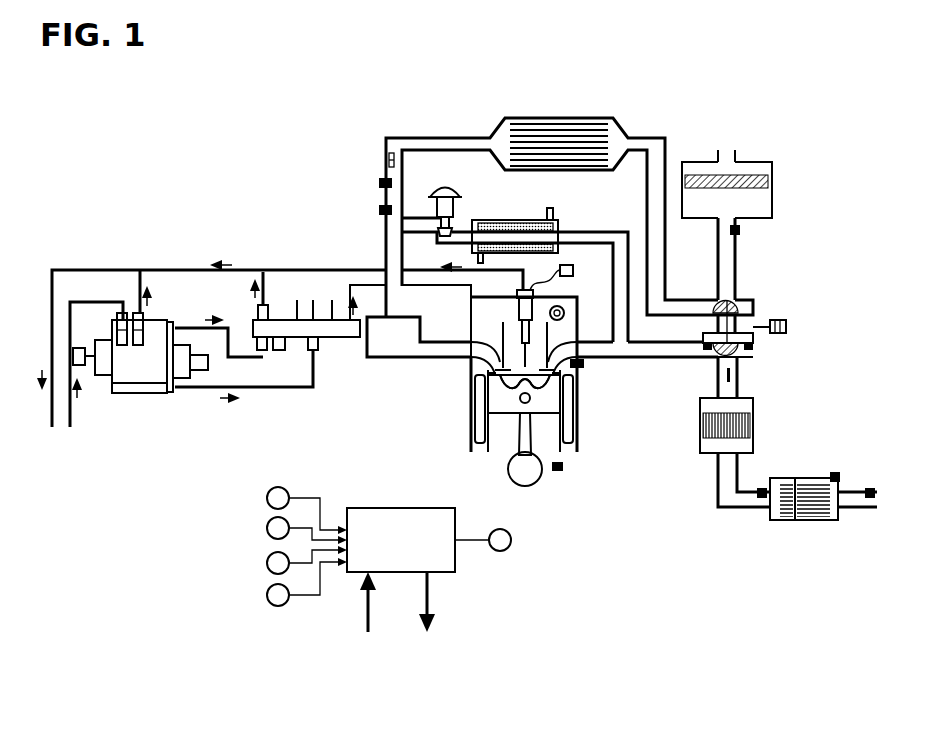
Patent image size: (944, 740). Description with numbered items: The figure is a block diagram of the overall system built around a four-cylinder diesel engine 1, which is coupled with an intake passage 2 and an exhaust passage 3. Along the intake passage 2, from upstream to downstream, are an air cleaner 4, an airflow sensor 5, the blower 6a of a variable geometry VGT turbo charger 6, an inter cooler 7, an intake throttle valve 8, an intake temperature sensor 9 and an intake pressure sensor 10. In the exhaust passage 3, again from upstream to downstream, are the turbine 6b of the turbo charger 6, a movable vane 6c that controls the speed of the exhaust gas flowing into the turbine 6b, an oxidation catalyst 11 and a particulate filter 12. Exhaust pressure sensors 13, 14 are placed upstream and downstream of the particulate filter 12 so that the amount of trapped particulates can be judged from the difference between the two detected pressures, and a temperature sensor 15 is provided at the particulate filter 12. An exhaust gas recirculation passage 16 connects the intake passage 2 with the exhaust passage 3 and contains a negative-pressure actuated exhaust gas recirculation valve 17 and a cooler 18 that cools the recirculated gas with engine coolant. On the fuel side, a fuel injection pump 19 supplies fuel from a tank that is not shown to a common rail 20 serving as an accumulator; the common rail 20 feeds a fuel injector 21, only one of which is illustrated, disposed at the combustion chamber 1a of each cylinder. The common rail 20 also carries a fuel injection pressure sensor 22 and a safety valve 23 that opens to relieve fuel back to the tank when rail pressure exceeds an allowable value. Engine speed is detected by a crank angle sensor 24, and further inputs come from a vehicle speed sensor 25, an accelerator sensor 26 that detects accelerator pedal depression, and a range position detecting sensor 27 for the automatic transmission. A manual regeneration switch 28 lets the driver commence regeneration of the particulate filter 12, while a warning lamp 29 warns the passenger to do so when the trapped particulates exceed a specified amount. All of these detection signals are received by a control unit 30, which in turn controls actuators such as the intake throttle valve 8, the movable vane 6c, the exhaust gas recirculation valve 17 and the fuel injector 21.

The diesel engine 1 is at (593, 445).
The combustion chamber 1a is at (513, 385).
The intake passage 2 is at (650, 124).
The exhaust passage 3 is at (631, 368).
The air cleaner 4 is at (763, 170).
The airflow sensor 5 is at (741, 230).
The VGT turbo charger 6 is at (750, 321).
The blower 6a is at (741, 305).
The turbine 6b is at (745, 355).
The movable vane 6c is at (708, 350).
The inter cooler 7 is at (535, 118).
The intake throttle valve 8 is at (393, 152).
The intake temperature sensor 9 is at (379, 182).
The intake pressure sensor 10 is at (379, 210).
The oxidation catalyst 11 is at (753, 422).
The particulate filter 12 is at (807, 507).
The exhaust pressure sensor 13 is at (758, 500).
The exhaust pressure sensor 14 is at (867, 500).
The temperature sensor 15 is at (833, 473).
The exhaust gas recirculation passage 16 is at (590, 230).
The exhaust gas recirculation valve 17 is at (447, 185).
The cooler 18 is at (520, 222).
The fuel injection pump 19 is at (140, 373).
The common rail 20 is at (337, 337).
The fuel injector 21 is at (522, 320).
The fuel injection pressure sensor 22 is at (279, 350).
The safety valve 23 is at (268, 305).
The crank angle sensor 24 is at (564, 467).
The vehicle speed sensor 25 is at (267, 496).
The accelerator sensor 26 is at (267, 528).
The range position detecting sensor 27 is at (267, 561).
The manual regeneration switch 28 is at (267, 594).
The warning lamp 29 is at (512, 540).
The control unit 30 is at (435, 557).